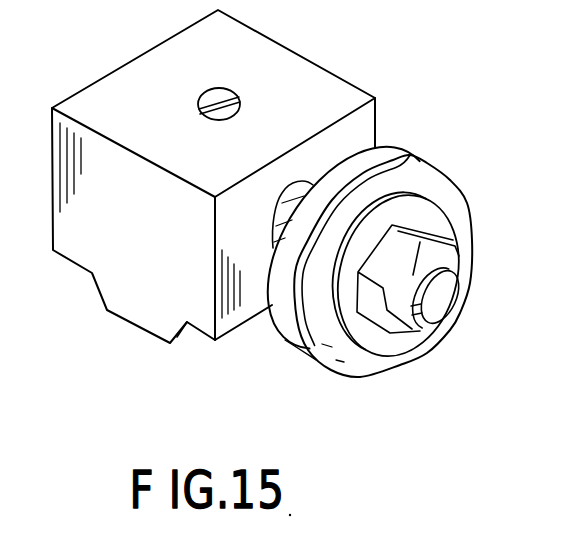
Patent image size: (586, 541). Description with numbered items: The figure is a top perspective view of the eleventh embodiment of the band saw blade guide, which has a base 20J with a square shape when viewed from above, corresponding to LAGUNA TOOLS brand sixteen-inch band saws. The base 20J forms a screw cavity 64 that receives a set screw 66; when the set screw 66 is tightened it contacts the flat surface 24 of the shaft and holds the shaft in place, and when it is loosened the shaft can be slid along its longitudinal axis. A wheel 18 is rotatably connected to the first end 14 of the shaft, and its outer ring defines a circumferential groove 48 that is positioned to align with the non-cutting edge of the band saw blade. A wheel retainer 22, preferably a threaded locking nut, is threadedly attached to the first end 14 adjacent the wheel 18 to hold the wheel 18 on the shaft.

The base 20J is at (400, 12).
The screw cavity 64 is at (216, 88).
The set screw 66 is at (222, 116).
The flat surface 24 is at (303, 180).
The wheel 18 is at (340, 380).
The groove 48 is at (287, 343).
The wheel retainer 22 is at (450, 266).
The first end 14 is at (438, 309).